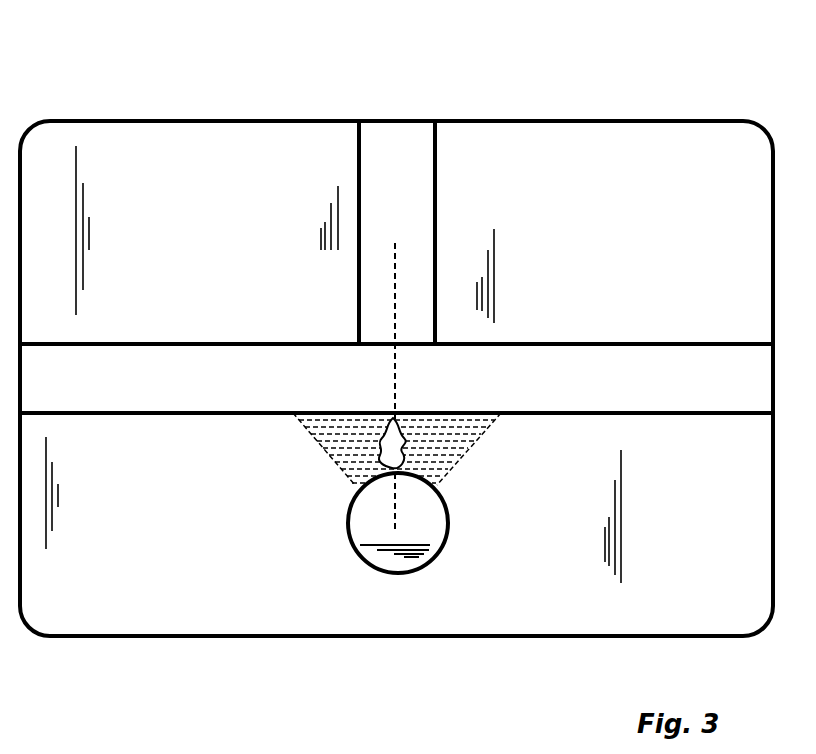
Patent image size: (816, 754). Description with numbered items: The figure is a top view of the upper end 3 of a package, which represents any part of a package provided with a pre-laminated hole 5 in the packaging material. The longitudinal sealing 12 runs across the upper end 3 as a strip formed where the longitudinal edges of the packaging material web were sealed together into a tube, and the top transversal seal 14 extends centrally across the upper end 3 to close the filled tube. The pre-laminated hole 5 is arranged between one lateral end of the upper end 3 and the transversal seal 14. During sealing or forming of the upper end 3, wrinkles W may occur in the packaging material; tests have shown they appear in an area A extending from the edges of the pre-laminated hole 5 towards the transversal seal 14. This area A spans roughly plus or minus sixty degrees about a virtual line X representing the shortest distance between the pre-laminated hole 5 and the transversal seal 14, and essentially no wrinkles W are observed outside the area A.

The upper end 3 is at (661, 214).
The top transversal seal 14 is at (166, 367).
The longitudinal sealing 12 is at (404, 151).
The area A is at (335, 438).
The pre-laminated hole 5 is at (385, 558).
The virtual line X is at (395, 290).
The wrinkles W is at (404, 447).